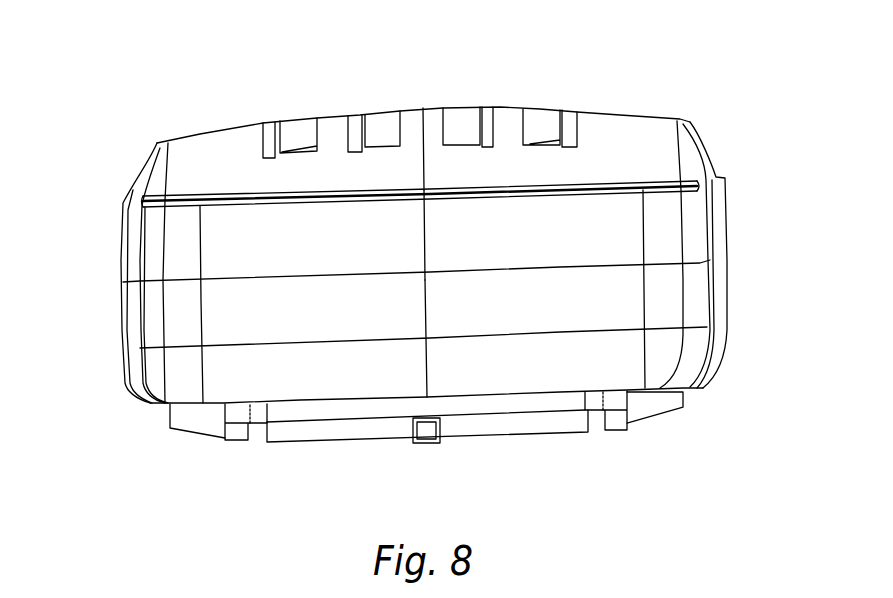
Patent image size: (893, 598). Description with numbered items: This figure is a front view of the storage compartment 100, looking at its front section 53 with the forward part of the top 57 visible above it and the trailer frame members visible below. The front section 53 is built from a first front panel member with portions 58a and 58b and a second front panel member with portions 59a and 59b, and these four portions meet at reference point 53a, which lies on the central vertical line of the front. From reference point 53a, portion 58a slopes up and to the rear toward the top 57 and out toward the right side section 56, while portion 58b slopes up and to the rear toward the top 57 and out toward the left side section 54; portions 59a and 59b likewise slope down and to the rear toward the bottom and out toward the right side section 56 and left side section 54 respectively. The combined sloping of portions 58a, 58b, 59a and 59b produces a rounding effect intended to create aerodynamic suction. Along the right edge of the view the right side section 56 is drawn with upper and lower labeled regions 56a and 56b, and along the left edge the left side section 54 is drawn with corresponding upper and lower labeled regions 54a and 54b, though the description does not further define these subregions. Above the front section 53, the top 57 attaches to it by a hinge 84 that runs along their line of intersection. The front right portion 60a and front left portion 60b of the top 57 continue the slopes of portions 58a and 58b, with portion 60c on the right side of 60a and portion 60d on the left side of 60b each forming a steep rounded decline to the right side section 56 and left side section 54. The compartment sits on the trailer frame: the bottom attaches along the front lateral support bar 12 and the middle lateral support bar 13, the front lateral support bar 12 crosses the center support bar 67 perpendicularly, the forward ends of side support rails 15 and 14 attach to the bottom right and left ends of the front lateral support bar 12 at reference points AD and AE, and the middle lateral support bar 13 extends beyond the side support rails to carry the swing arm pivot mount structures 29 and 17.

The storage compartment 100 is at (213, 101).
The top section 57 is at (428, 99).
The front right portion 60a is at (273, 187).
The front left portion 60b is at (500, 180).
The portion 60c is at (160, 158).
The portion 60d is at (683, 140).
The hinge 84 is at (393, 213).
The portion 58a is at (278, 257).
The portion 58b is at (511, 249).
The reference point 53a is at (433, 270).
The portion 59a is at (279, 324).
The portion 59b is at (516, 313).
The right side section 56 is at (129, 294).
The left bolster upper portion 56a is at (148, 243).
The left bolster lower portion 56b is at (150, 317).
The left side section 54 is at (733, 248).
The right bolster upper portion 54a is at (697, 223).
The right bolster lower portion 54b is at (702, 303).
The front lateral support bar 12 is at (472, 401).
The middle lateral support bar 13 is at (357, 444).
The center support bar 67 is at (423, 443).
The front section 53 is at (454, 407).
The swing arm pivot mount structure 29 is at (195, 422).
The side support rail 15 is at (238, 435).
The reference point AD is at (250, 424).
The side support rail 14 is at (618, 426).
The reference point AE is at (602, 412).
The swing arm pivot mount structure 17 is at (658, 405).